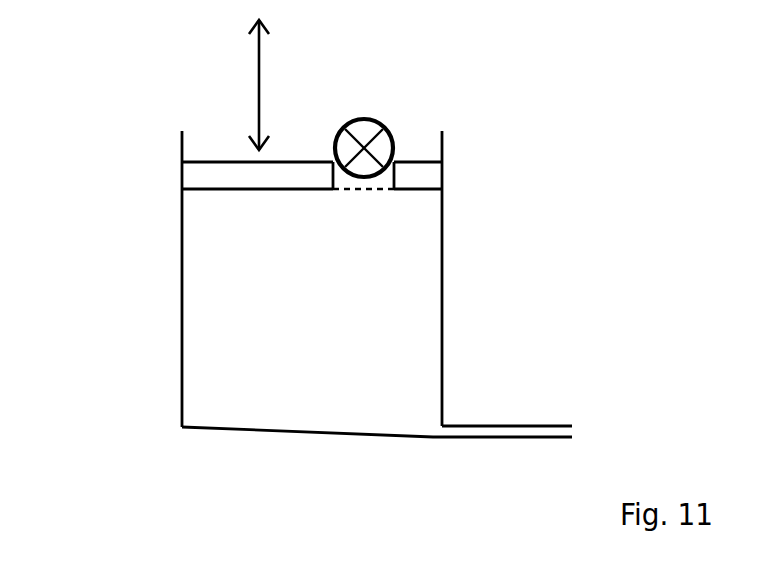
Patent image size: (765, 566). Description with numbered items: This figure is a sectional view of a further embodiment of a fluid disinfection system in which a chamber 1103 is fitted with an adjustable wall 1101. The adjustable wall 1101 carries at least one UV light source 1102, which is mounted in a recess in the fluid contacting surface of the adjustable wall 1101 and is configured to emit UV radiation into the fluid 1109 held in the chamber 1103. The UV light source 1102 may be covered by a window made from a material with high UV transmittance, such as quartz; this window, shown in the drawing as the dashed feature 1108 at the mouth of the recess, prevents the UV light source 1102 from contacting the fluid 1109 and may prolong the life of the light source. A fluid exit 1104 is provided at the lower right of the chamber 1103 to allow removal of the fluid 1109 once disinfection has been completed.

The adjustable wall 1101 is at (257, 178).
The UV light source 1102 is at (375, 103).
The chamber 1103 is at (173, 291).
The fluid exit 1104 is at (537, 409).
The opening 1108 is at (374, 191).
The fluid 1109 is at (300, 280).